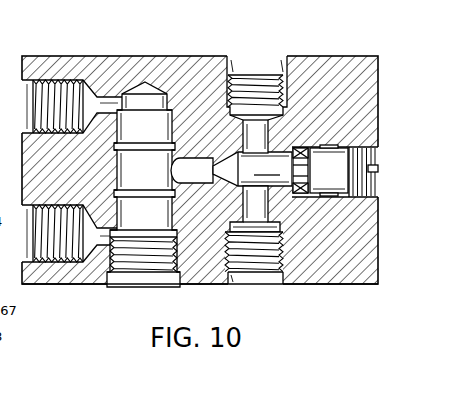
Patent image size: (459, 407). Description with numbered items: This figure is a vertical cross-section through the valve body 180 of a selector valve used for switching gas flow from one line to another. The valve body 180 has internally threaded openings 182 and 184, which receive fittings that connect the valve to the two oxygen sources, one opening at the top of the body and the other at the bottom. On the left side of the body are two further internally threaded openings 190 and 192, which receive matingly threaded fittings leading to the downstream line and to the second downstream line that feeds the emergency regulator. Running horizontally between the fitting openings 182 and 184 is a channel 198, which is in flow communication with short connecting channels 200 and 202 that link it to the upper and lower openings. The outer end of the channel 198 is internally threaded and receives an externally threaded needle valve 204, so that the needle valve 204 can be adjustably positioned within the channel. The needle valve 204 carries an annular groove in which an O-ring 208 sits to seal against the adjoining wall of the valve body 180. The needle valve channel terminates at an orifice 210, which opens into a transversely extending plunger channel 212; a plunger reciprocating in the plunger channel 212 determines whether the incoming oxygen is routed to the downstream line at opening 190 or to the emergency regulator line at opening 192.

The valve body 180 is at (345, 62).
The internally threaded opening 182 is at (224, 62).
The internally threaded opening 184 is at (280, 257).
The internally threaded opening 190 is at (57, 265).
The internally threaded opening 192 is at (57, 78).
The channel 198 is at (314, 148).
The short connecting channel 200 is at (270, 131).
The short connecting channel 202 is at (268, 208).
The needle valve 204 is at (231, 169).
The O-ring 208 is at (307, 160).
The orifice 210 is at (161, 184).
The plunger channel 212 is at (175, 215).